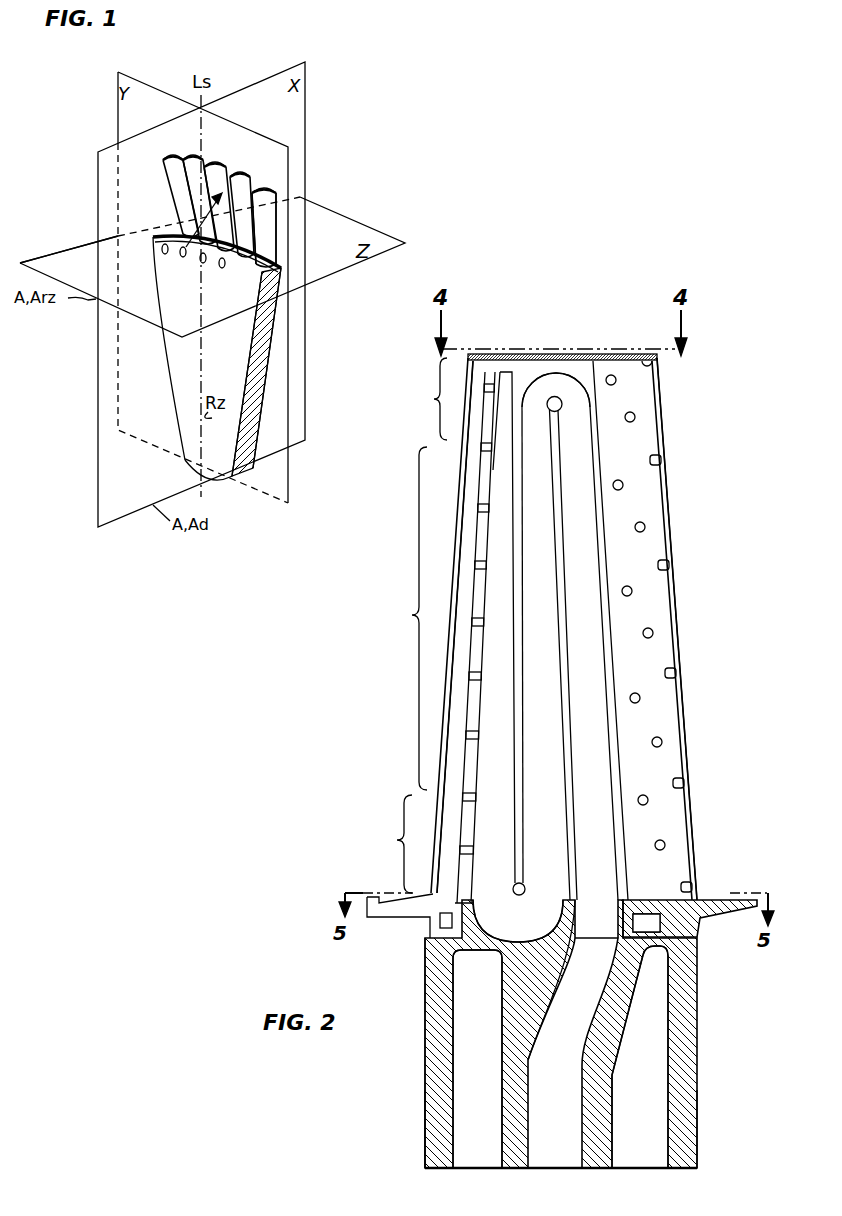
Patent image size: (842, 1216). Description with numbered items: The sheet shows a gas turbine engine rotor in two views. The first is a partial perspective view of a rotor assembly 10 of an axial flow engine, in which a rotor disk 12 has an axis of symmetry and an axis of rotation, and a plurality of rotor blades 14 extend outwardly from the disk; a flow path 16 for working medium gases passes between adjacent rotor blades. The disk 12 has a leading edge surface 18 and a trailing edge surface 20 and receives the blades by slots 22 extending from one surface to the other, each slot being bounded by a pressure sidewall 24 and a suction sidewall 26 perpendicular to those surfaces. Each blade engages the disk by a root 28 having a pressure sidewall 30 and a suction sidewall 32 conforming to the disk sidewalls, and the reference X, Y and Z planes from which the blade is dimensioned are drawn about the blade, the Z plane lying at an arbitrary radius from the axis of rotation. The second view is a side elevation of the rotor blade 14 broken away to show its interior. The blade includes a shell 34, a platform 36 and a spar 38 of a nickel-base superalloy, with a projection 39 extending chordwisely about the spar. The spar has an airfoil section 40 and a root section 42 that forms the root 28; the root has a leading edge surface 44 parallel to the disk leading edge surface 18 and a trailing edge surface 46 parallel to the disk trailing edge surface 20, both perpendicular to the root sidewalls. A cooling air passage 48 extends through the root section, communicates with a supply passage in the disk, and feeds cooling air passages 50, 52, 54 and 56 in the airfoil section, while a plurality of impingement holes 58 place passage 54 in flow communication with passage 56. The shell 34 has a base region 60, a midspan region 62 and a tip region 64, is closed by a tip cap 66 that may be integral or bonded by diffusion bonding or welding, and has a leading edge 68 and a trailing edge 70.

In FIG. 1, the rotor assembly 10 is at (314, 338).
In FIG. 1, the rotor disk 12 is at (230, 383).
In FIG. 1, the rotor blade 14 is at (276, 221).
In FIG. 2, the rotor blade 14 is at (398, 697).
In FIG. 1, the flow path 16 is at (160, 218).
In FIG. 1, the leading edge surface 18 is at (222, 440).
In FIG. 1, the trailing edge surface 20 is at (258, 404).
In FIG. 1, the slot 22 is at (216, 291).
In FIG. 1, the pressure sidewall 24 is at (243, 270).
In FIG. 1, the suction sidewall 26 is at (232, 278).
In FIG. 1, the root 28 is at (212, 270).
In FIG. 2, the root 28 is at (700, 1029).
In FIG. 1, the pressure sidewall 30 is at (224, 266).
In FIG. 1, the suction sidewall 32 is at (205, 264).
In FIG. 2, the shell 34 is at (688, 766).
In FIG. 2, the platform 36 is at (414, 903).
In FIG. 2, the spar 38 is at (425, 1004).
In FIG. 2, the projection 39 is at (456, 920).
In FIG. 2, the airfoil section 40 is at (584, 377).
In FIG. 2, the root section 42 is at (524, 966).
In FIG. 2, the leading edge surface 44 is at (425, 1105).
In FIG. 2, the trailing edge surface 46 is at (697, 1105).
In FIG. 2, the cooling air passage 48 is at (485, 1032).
In FIG. 2, the cooling air passage 50 is at (596, 726).
In FIG. 2, the cooling air passage 52 is at (550, 726).
In FIG. 2, the cooling air passage 54 is at (505, 726).
In FIG. 2, the cooling air passage 56 is at (455, 711).
In FIG. 2, the impingement holes 58 is at (463, 832).
In FIG. 2, the base region 60 is at (373, 844).
In FIG. 2, the midspan region 62 is at (401, 618).
In FIG. 2, the tip region 64 is at (427, 399).
In FIG. 2, the tip cap 66 is at (604, 356).
In FIG. 2, the leading edge 68 is at (452, 546).
In FIG. 2, the trailing edge 70 is at (677, 577).